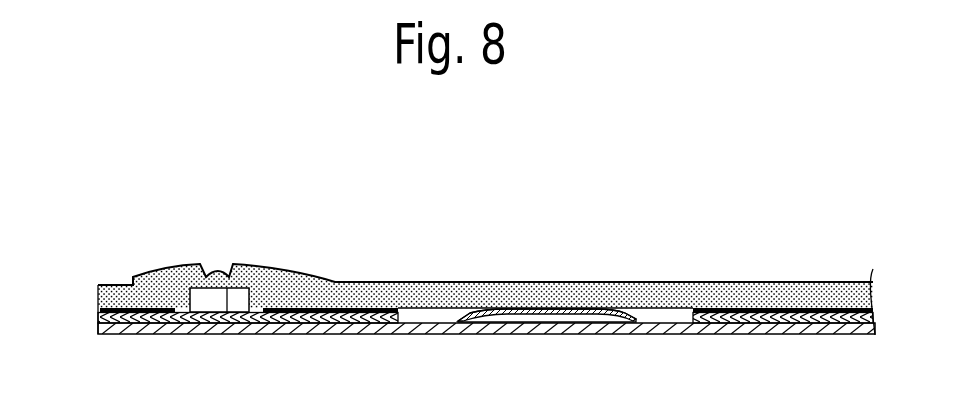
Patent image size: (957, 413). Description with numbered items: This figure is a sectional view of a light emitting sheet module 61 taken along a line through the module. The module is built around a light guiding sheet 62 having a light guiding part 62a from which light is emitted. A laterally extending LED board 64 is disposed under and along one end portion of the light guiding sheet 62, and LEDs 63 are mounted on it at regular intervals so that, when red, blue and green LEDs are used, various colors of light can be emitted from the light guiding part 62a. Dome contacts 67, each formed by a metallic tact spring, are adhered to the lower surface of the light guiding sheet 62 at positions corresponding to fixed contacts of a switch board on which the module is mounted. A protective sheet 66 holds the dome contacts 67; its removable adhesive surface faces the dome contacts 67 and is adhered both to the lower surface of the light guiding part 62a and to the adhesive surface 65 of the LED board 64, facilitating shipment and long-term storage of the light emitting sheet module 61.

The light emitting sheet module 61 is at (718, 187).
The light guiding sheet 62 is at (818, 281).
The light guiding part 62a is at (565, 282).
The LED 63 is at (200, 292).
The LED board 64 is at (98, 314).
The adhesive surface 65 is at (97, 324).
The protective sheet 66 is at (97, 335).
The dome contact 67 is at (477, 310).